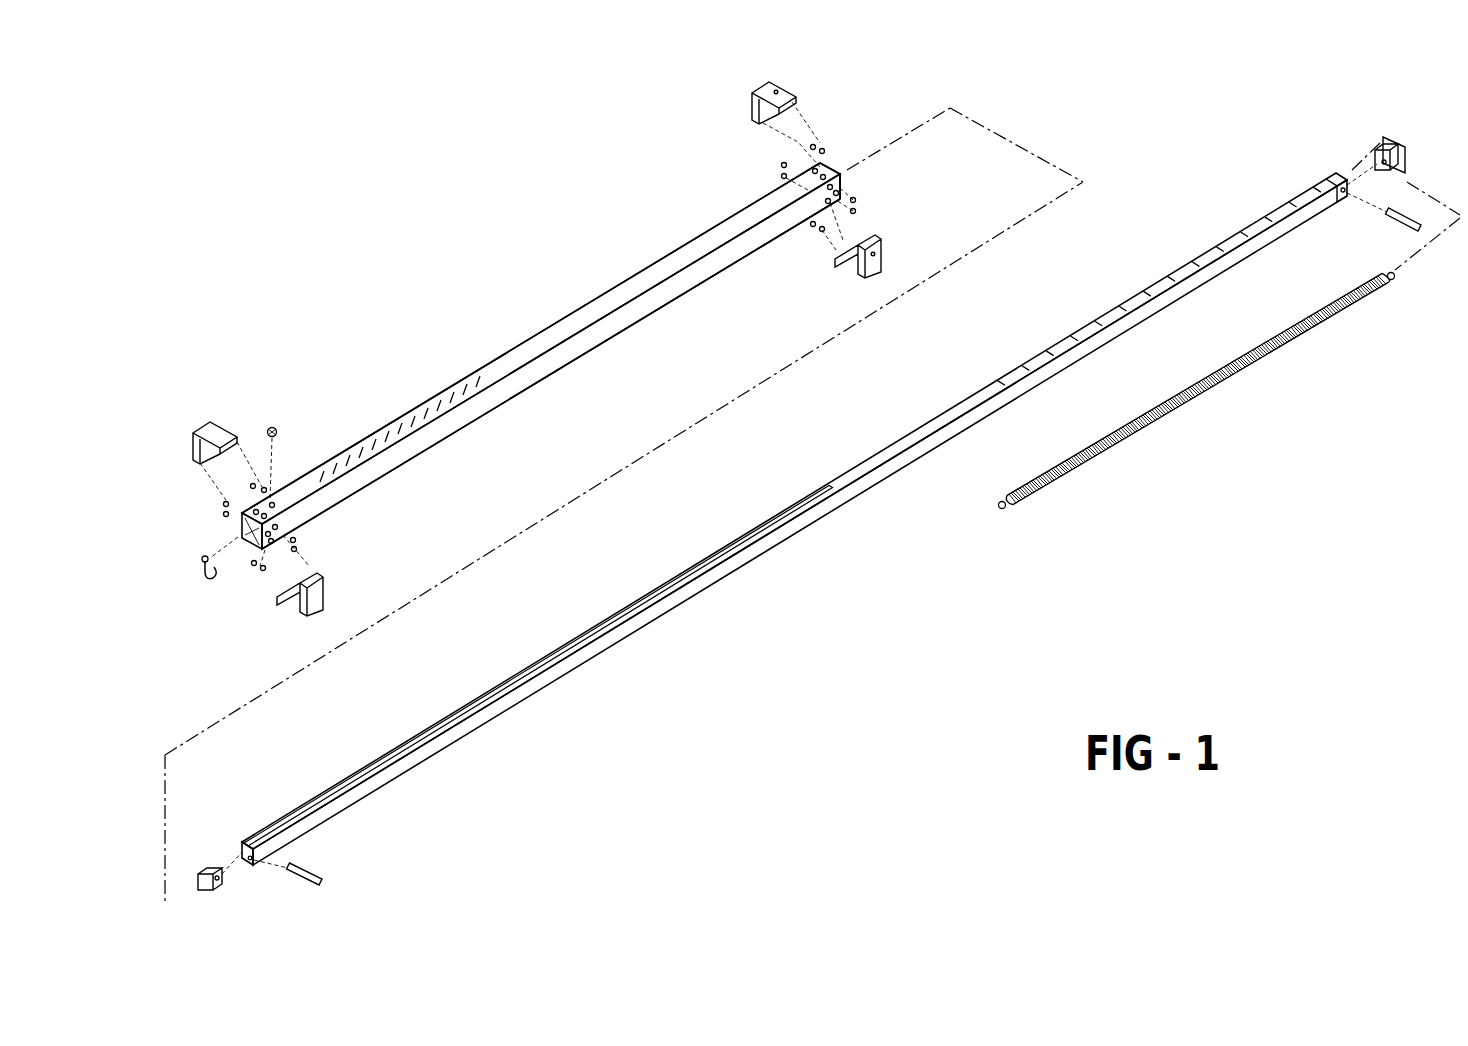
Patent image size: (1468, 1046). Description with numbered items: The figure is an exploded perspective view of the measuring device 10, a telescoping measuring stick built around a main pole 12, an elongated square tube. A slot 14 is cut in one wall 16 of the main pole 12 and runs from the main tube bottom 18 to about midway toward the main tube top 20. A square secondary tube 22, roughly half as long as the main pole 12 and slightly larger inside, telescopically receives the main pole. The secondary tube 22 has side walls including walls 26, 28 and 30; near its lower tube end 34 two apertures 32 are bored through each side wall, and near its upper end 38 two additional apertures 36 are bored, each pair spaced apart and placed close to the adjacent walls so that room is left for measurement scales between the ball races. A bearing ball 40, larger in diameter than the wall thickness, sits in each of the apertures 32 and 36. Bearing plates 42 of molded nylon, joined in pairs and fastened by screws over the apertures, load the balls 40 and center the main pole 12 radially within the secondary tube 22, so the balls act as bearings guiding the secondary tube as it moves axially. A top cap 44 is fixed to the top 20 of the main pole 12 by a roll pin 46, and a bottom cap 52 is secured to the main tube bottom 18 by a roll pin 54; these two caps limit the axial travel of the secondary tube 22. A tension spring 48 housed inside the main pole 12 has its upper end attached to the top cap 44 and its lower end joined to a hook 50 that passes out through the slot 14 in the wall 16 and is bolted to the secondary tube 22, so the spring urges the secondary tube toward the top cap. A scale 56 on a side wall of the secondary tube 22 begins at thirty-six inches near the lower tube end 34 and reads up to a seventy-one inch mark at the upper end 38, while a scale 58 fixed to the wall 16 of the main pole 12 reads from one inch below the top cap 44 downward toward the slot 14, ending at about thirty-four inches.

The measuring device 10 is at (428, 189).
The main pole 12 is at (865, 481).
The slot 14 is at (585, 641).
The wall 16 is at (880, 456).
The main tube bottom 18 is at (241, 843).
The main tube top 20 is at (1340, 186).
The secondary tube 22 is at (620, 283).
The side wall 26 is at (538, 372).
The side wall 28 is at (605, 343).
The side wall 30 is at (512, 347).
The apertures 32 is at (270, 503).
The lower tube end 34 is at (255, 549).
The additional apertures 36 is at (808, 190).
The upper end 38 is at (848, 178).
The bearing ball 40 is at (813, 146).
The bearing plates 42 is at (765, 97).
The top cap 44 is at (1398, 138).
The roll pin 46 is at (1400, 226).
The tension spring 48 is at (1225, 376).
The hook 50 is at (200, 571).
The bottom cap 52 is at (197, 870).
The roll pin 54 is at (318, 873).
The scale 56 is at (415, 413).
The scale 58 is at (1172, 280).